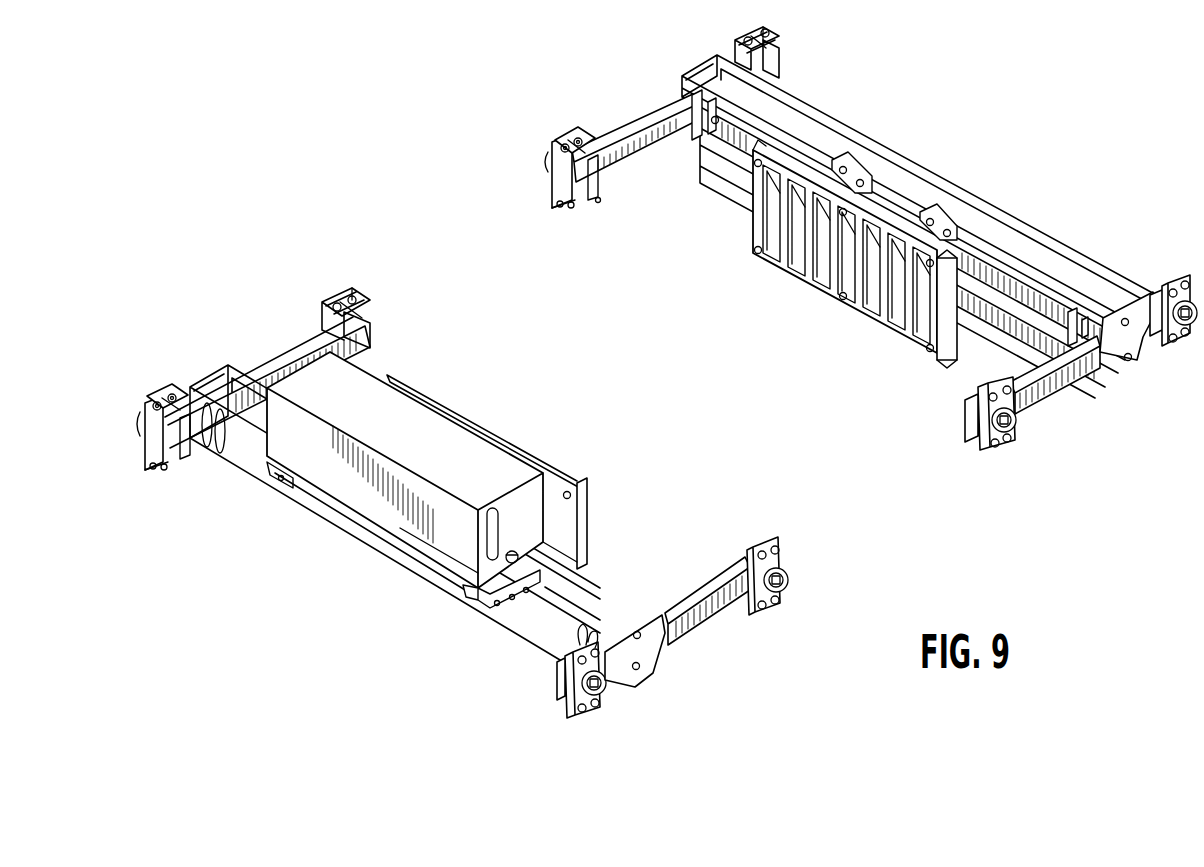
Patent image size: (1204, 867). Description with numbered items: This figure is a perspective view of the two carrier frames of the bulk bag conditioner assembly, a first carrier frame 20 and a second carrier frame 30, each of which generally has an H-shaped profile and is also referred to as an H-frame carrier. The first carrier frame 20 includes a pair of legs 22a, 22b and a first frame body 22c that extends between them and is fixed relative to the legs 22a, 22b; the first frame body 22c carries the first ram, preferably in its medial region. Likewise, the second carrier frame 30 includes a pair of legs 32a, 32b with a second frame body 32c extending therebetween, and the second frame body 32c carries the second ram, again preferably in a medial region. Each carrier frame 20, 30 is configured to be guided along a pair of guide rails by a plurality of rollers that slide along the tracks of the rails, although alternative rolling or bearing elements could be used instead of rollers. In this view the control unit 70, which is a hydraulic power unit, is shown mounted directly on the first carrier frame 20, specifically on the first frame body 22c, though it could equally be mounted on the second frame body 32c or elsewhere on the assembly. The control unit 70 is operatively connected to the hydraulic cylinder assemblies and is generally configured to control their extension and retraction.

The first carrier frame 20 is at (462, 502).
The leg 22a is at (300, 350).
The leg 22b is at (690, 600).
The first frame body 22c is at (560, 587).
The second carrier frame 30 is at (863, 273).
The leg 32a is at (637, 120).
The leg 32b is at (1045, 395).
The second frame body 32c is at (822, 140).
The control unit 70 is at (340, 460).